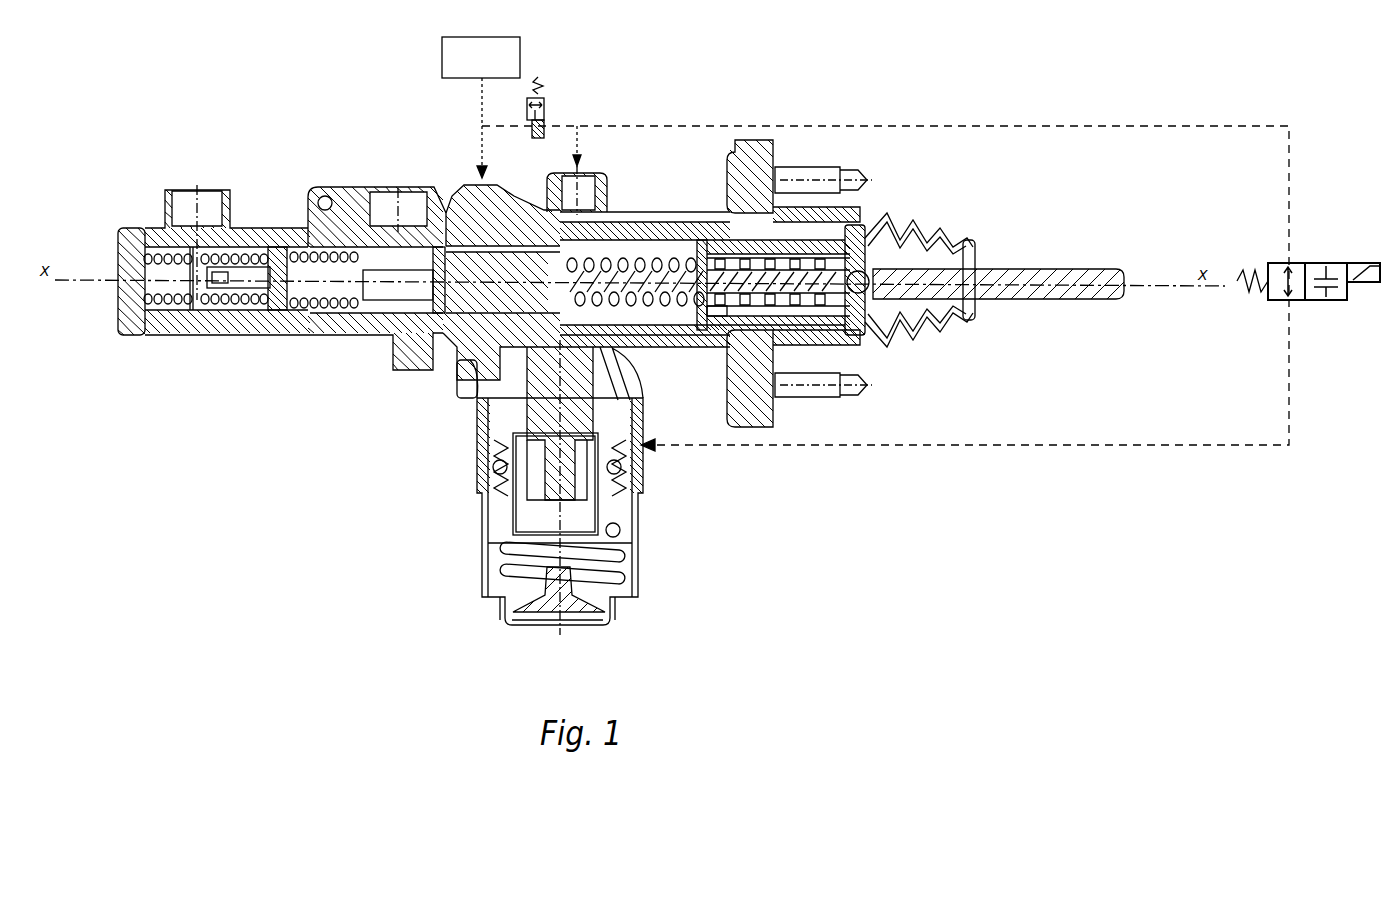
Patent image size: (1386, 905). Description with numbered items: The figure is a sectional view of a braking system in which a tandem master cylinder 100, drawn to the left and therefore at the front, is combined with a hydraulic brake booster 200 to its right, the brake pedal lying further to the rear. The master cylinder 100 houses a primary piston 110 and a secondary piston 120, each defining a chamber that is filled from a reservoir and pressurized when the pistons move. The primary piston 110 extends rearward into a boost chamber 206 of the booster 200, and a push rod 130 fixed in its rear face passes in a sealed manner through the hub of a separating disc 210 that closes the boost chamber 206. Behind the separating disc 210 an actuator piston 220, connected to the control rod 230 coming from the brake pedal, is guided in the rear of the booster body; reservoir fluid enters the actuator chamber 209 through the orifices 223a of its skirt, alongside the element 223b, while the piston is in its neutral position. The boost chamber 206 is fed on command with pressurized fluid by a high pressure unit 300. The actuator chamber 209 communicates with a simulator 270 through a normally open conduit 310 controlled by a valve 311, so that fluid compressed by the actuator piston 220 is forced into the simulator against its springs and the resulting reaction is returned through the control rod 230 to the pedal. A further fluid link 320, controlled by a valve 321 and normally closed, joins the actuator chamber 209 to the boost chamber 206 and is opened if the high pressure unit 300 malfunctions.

The master cylinder 100 is at (380, 312).
The primary piston 110 is at (447, 349).
The secondary piston 120 is at (288, 336).
The push rod 130 is at (665, 258).
The hydraulic brake booster 200 is at (756, 350).
The boost chamber 206 is at (491, 187).
The actuator chamber 209 is at (698, 340).
The separating disc 210 is at (460, 382).
The actuator piston 220 is at (871, 345).
The orifices 223a is at (724, 356).
The guide bushing 223b is at (862, 350).
The control rod 230 is at (1038, 297).
The simulator 270 is at (470, 548).
The high pressure unit 300 is at (481, 57).
The conduit 310 is at (931, 269).
The valve 311 is at (1267, 300).
The fluid link 320 is at (502, 125).
The valve 321 is at (540, 115).